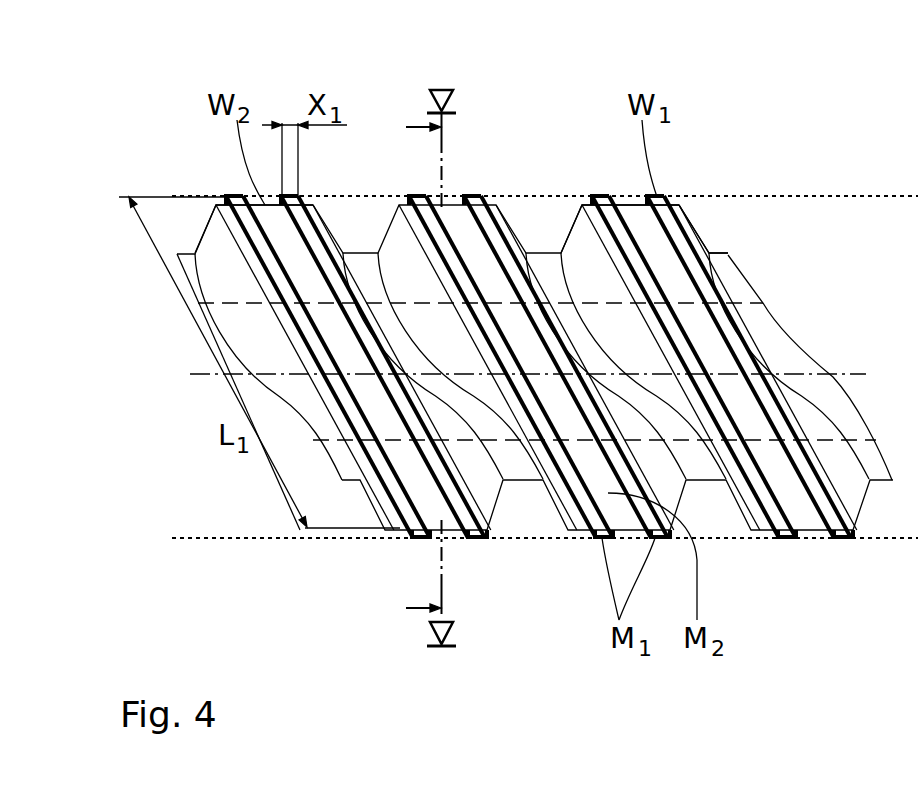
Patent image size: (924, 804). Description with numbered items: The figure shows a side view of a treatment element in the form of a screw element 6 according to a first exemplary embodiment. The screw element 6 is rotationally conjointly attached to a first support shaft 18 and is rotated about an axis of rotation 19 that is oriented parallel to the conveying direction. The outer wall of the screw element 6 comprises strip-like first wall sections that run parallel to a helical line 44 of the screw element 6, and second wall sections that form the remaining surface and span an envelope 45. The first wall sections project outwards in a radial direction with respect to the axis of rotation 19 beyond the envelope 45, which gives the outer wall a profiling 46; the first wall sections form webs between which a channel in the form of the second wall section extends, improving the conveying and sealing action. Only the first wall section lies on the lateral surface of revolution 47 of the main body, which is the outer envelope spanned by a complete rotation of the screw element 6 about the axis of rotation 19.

The screw element 6 is at (452, 190).
The first support shaft 18 is at (495, 438).
The axis of rotation 19 is at (735, 373).
The helical line 44 is at (233, 240).
The envelope 45 is at (620, 197).
The profiling 46 is at (449, 540).
The lateral surface of revolution 47 is at (712, 197).